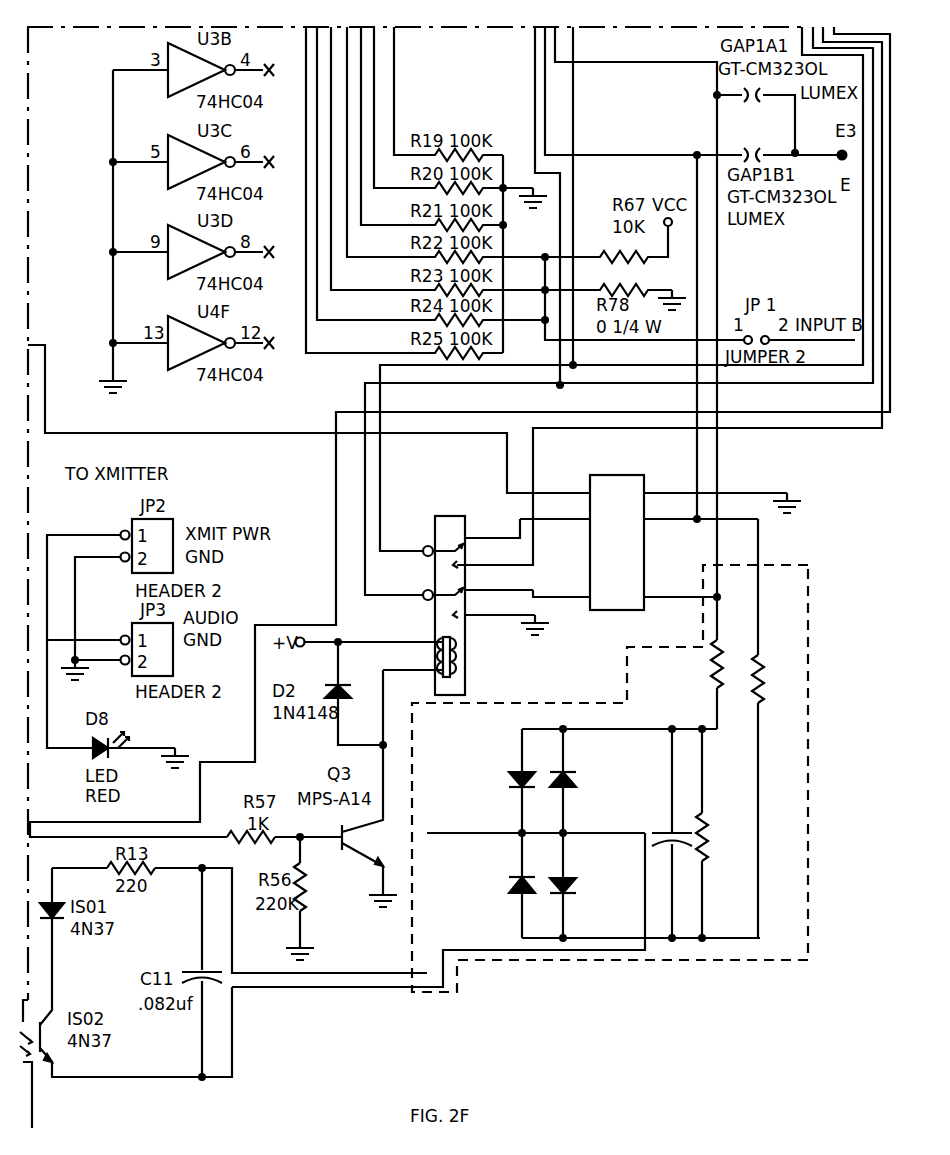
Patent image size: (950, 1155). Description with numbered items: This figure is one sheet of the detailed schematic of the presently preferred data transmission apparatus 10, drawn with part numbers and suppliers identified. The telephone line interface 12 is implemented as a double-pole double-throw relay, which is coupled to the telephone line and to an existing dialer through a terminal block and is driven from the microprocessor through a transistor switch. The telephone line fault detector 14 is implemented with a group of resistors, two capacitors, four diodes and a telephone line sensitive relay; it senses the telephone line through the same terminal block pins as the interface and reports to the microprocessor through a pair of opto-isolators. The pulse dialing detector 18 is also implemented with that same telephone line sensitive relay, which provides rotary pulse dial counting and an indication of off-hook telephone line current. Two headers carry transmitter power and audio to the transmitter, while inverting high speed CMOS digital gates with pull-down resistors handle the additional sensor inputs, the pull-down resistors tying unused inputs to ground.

The data transmission apparatus 10 is at (724, 1063).
The telephone line interface 12 is at (465, 655).
The telephone line fault detector 14 is at (808, 722).
The pulse dialing detector 18 is at (590, 603).